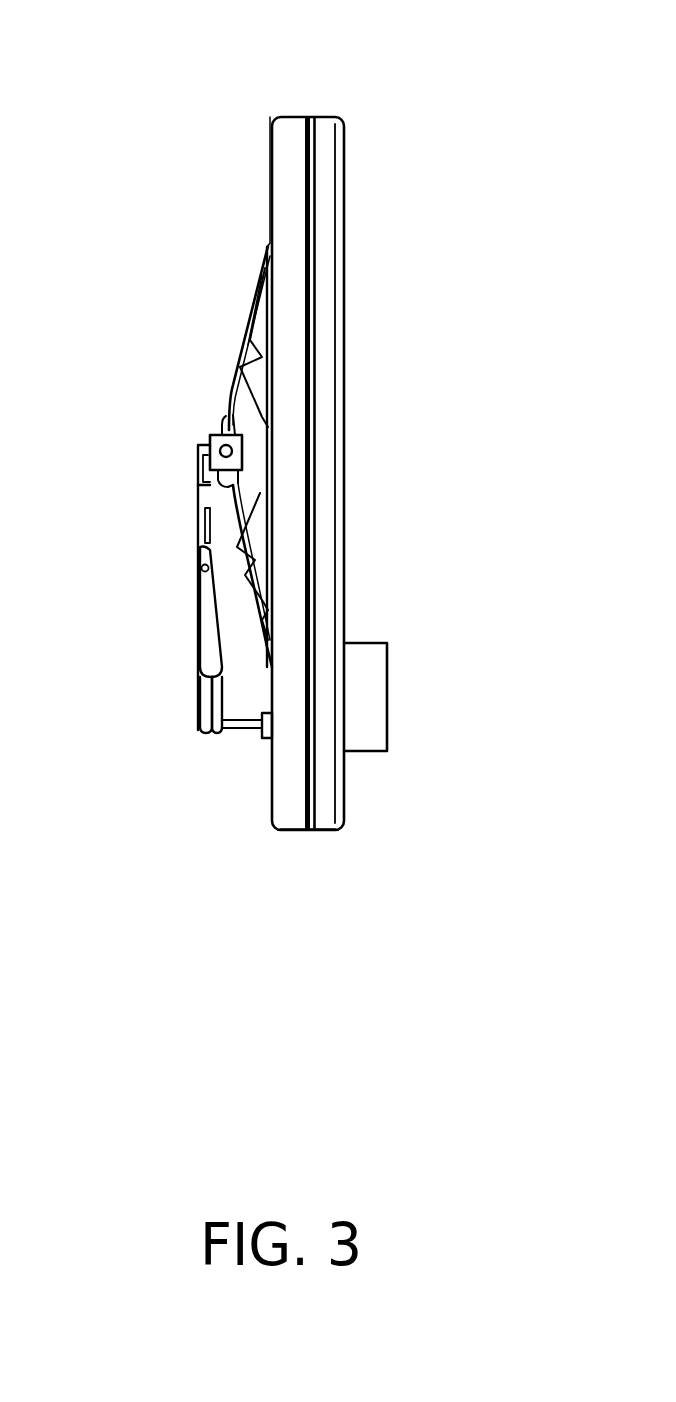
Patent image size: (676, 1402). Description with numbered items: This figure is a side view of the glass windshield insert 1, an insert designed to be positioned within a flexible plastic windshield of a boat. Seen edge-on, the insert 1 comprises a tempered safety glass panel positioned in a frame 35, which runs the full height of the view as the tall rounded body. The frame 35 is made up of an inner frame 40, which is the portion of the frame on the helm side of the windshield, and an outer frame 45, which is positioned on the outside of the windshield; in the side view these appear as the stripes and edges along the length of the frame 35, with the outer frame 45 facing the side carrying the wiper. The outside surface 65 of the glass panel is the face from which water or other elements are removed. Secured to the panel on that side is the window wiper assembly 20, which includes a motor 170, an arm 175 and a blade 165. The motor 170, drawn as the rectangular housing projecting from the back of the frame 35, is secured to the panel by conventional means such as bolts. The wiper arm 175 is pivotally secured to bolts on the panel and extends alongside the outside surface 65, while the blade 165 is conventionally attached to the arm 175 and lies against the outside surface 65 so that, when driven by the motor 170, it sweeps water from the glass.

The glass windshield insert 1 is at (312, 99).
The window wiper assembly 20 is at (183, 750).
The frame 35 is at (312, 848).
The inner frame 40 is at (320, 116).
The outer frame 45 is at (270, 747).
The outside surface 65 is at (271, 176).
The blade 165 is at (250, 303).
The motor 170 is at (387, 687).
The arm 175 is at (197, 618).